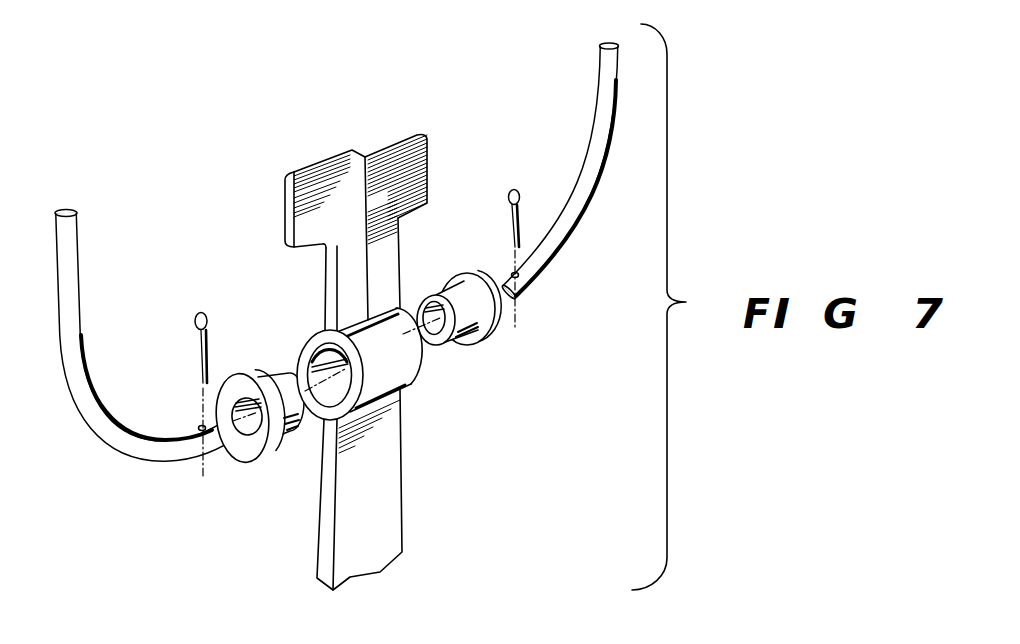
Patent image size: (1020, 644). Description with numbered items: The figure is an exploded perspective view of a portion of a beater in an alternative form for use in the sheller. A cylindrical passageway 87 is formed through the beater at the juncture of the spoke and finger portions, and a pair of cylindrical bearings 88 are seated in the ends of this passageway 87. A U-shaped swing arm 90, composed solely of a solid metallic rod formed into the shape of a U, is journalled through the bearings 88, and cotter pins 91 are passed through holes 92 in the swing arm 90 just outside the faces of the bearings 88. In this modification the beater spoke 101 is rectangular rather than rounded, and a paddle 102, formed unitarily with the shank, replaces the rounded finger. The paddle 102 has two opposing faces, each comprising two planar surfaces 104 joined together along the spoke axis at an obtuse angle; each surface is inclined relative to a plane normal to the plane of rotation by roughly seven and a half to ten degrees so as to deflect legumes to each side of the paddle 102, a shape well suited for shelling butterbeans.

The cylindrical passageway 87 is at (304, 354).
The cylindrical bearings 88 is at (251, 452).
The U-shaped swing arm 90 is at (75, 333).
The cotter pins 91 is at (208, 331).
The holes 92 is at (199, 427).
The beater spoke 101 is at (383, 487).
The paddle 102 is at (436, 203).
The planar surfaces 104 is at (352, 283).